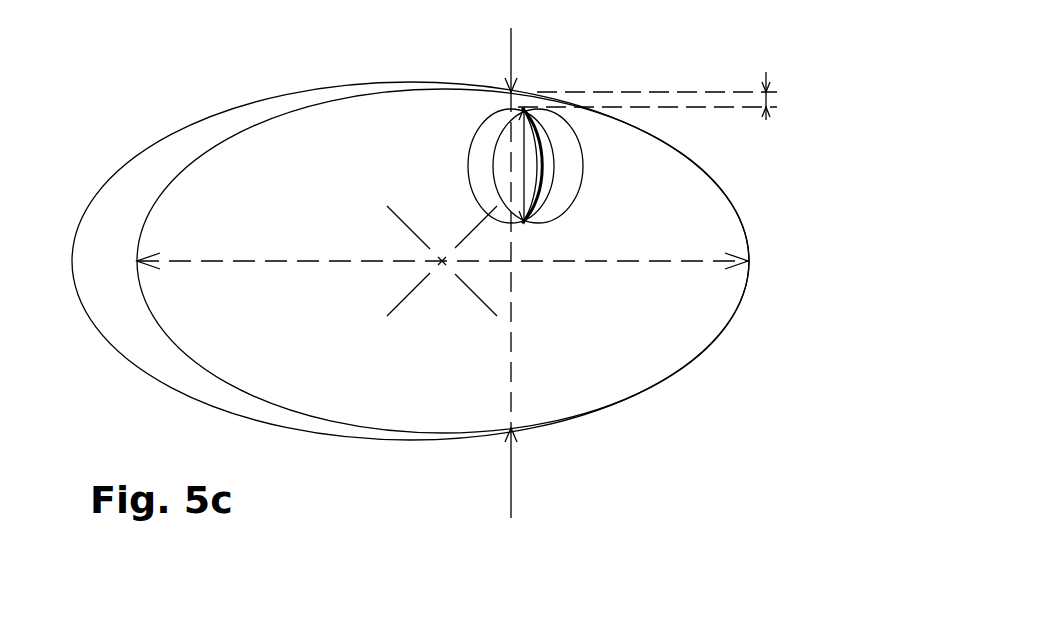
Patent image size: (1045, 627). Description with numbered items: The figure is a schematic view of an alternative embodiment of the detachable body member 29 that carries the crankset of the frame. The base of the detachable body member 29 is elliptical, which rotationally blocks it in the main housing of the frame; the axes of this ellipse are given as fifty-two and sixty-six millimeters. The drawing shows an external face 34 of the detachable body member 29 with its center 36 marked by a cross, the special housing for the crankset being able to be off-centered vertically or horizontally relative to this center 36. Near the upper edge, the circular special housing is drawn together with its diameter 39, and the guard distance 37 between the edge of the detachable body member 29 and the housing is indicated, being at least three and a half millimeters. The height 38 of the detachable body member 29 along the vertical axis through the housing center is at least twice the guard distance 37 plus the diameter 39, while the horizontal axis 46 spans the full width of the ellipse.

The detachable body member 29 is at (657, 328).
The external face 34 is at (305, 375).
The center 36 is at (443, 264).
The guard distance 37 is at (767, 98).
The height 38 is at (511, 347).
The diameter 39 is at (525, 175).
The horizontal major axis 46 is at (322, 261).